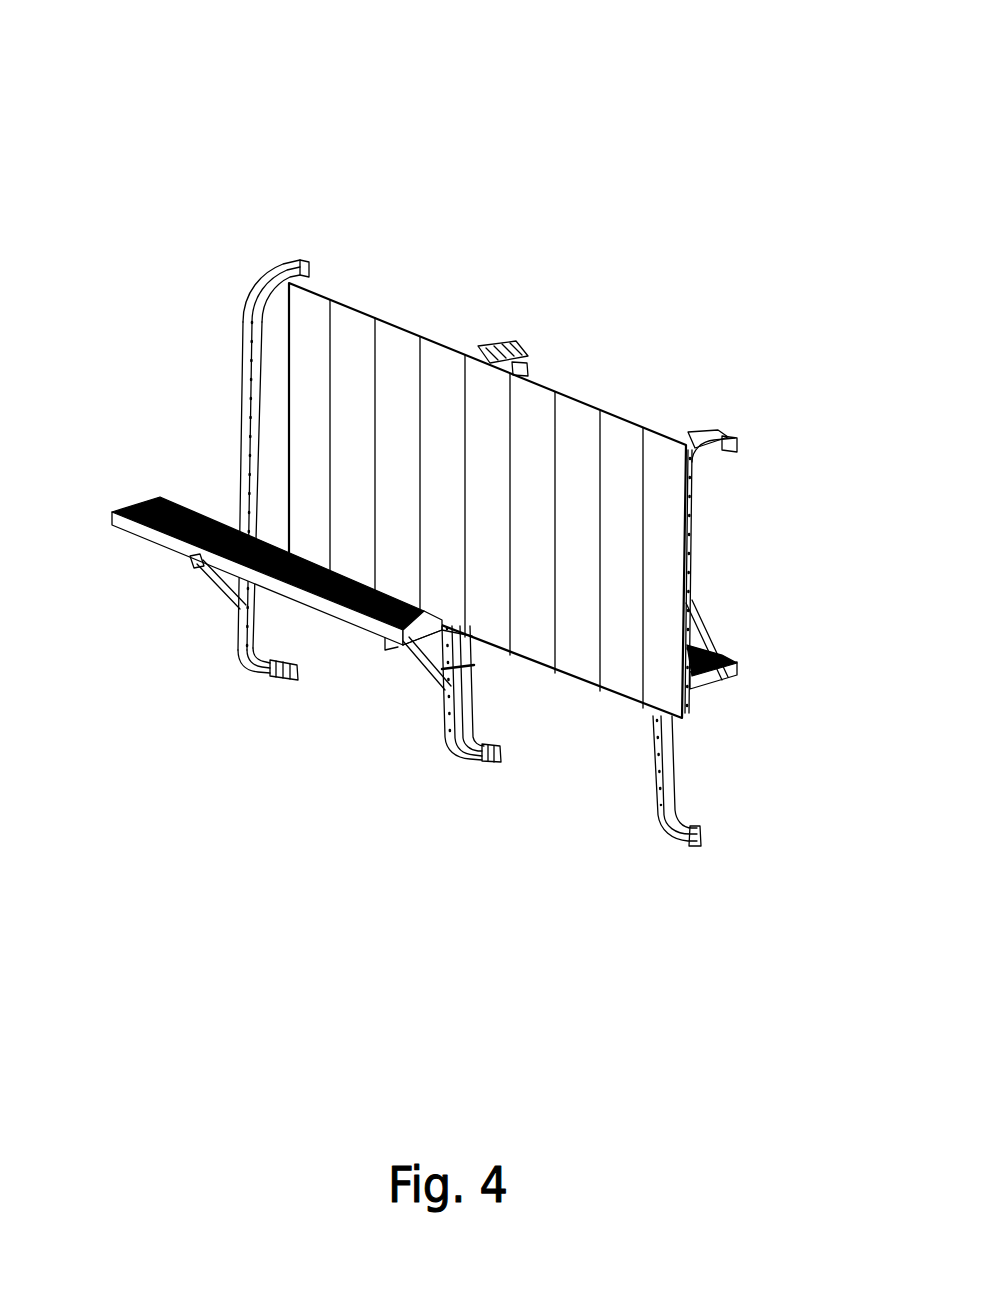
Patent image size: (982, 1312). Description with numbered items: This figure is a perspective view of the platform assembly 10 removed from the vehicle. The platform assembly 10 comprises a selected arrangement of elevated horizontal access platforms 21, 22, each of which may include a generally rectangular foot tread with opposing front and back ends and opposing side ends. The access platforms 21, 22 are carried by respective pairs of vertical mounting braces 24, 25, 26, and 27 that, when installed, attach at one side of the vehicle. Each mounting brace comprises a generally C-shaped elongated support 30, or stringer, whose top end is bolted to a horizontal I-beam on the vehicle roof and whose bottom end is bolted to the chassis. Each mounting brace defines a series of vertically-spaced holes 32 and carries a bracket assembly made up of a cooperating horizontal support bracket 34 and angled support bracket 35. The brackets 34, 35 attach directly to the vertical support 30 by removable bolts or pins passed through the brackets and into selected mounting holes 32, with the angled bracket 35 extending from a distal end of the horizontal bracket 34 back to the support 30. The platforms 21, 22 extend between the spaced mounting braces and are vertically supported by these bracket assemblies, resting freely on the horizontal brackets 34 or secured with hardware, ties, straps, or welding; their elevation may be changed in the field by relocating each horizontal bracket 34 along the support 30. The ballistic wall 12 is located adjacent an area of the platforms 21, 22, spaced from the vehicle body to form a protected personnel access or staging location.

The platform assembly 10 is at (277, 150).
The ballistic wall 12 is at (658, 528).
The access platform 21 is at (723, 653).
The access platform 22 is at (150, 492).
The vertical mounting brace 24 is at (697, 435).
The vertical mounting brace 25 is at (524, 378).
The vertical mounting brace 26 is at (480, 347).
The vertical mounting brace 27 is at (241, 321).
The C-shaped elongated support 30 is at (241, 405).
The mounting holes 32 is at (238, 642).
The horizontal support bracket 34 is at (193, 560).
The angled support bracket 35 is at (206, 600).